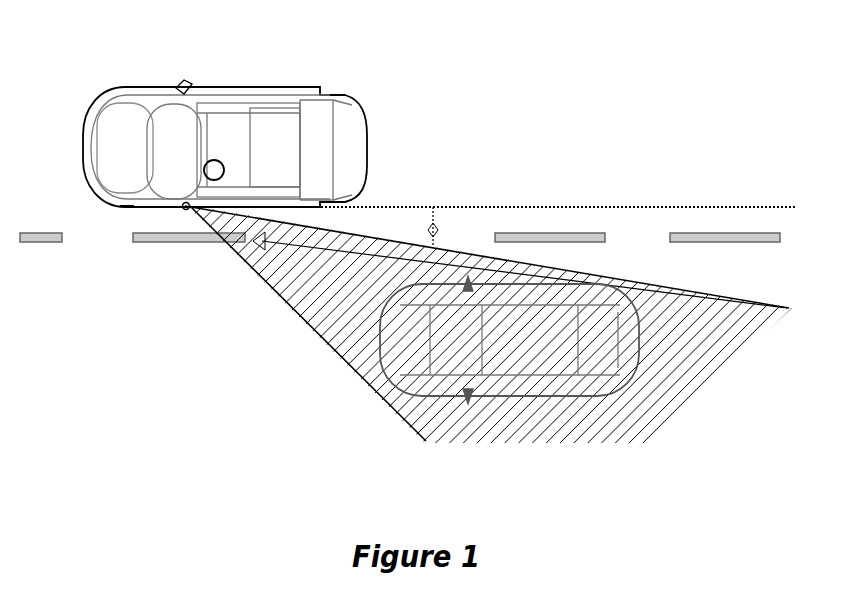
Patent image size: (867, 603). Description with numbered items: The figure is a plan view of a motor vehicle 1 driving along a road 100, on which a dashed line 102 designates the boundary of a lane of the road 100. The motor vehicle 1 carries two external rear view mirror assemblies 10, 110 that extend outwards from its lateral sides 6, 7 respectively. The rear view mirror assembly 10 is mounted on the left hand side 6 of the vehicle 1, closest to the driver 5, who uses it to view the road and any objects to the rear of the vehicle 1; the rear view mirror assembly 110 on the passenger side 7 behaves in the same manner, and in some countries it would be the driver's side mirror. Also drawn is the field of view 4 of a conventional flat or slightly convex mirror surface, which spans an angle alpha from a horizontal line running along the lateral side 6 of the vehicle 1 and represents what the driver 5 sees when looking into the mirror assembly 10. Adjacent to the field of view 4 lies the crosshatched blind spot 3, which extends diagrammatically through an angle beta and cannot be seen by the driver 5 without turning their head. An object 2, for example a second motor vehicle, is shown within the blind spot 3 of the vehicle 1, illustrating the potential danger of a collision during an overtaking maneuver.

The motor vehicle 1 is at (88, 117).
The object 2 is at (385, 338).
The blind spot 3 is at (275, 293).
The field of view 4 is at (578, 206).
The driver 5 is at (218, 160).
The lateral side 6 is at (126, 206).
The lateral side 7 is at (137, 86).
The rear view mirror assembly 10 is at (185, 211).
The road 100 is at (497, 155).
The dashed line 102 is at (742, 244).
The rear view mirror assembly 110 is at (184, 82).